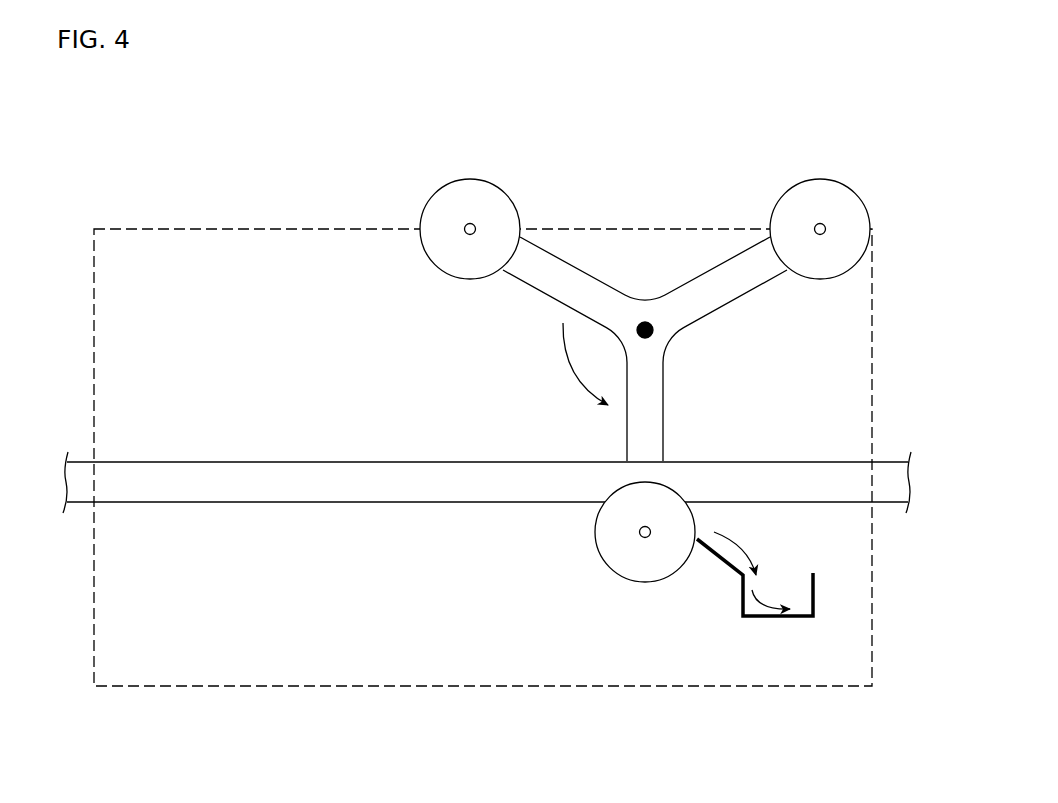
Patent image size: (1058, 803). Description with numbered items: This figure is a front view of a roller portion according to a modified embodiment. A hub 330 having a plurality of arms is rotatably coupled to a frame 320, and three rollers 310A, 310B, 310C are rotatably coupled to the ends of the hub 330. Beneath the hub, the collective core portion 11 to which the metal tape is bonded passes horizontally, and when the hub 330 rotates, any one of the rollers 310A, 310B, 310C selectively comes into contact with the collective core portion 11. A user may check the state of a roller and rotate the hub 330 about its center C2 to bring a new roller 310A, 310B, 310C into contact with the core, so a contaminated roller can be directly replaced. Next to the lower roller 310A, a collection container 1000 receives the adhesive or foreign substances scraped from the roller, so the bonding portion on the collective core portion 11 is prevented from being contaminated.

The frame 320 is at (873, 327).
The collective core portion 11 is at (212, 458).
The hub 330 is at (728, 287).
The roller 310B is at (468, 178).
The roller 310C is at (817, 178).
The roller 310A is at (640, 582).
The center point C2 is at (645, 320).
The collection container 1000 is at (820, 627).